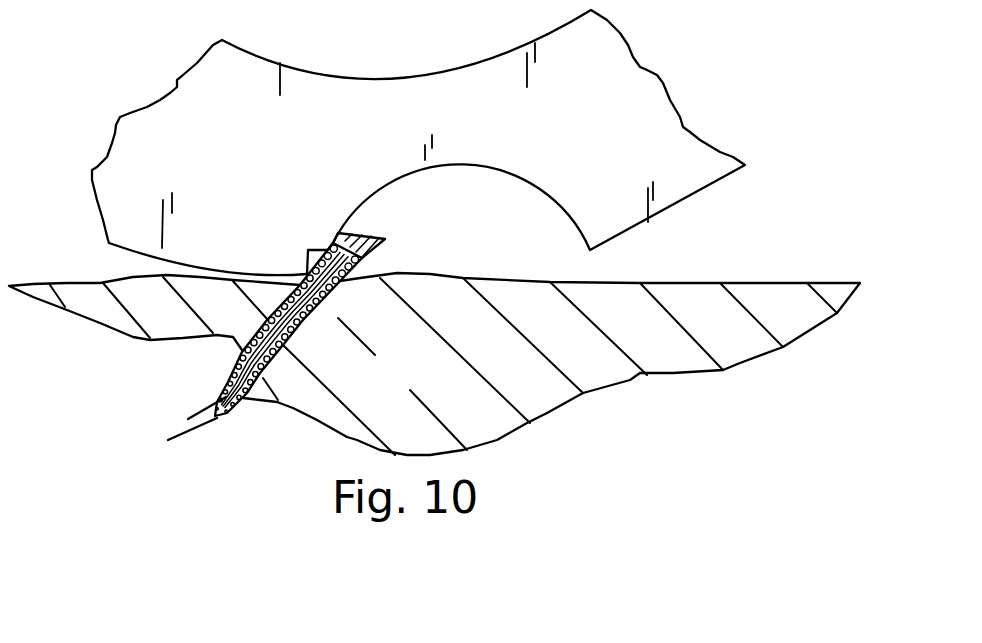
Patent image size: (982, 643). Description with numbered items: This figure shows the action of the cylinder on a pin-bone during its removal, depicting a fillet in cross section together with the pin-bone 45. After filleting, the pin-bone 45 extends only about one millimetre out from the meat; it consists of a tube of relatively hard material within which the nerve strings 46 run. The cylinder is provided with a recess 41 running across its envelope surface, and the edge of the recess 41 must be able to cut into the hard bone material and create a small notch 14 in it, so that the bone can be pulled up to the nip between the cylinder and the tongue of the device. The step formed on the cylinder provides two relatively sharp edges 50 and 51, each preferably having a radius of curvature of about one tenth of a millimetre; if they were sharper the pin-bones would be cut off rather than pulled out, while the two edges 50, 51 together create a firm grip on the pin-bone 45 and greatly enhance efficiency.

The recess 41 is at (467, 216).
The notch 14 is at (362, 262).
The sharp edge 50 is at (302, 273).
The sharp edge 51 is at (328, 248).
The pin-bone 45 is at (333, 305).
The nerve strings 46 is at (218, 400).